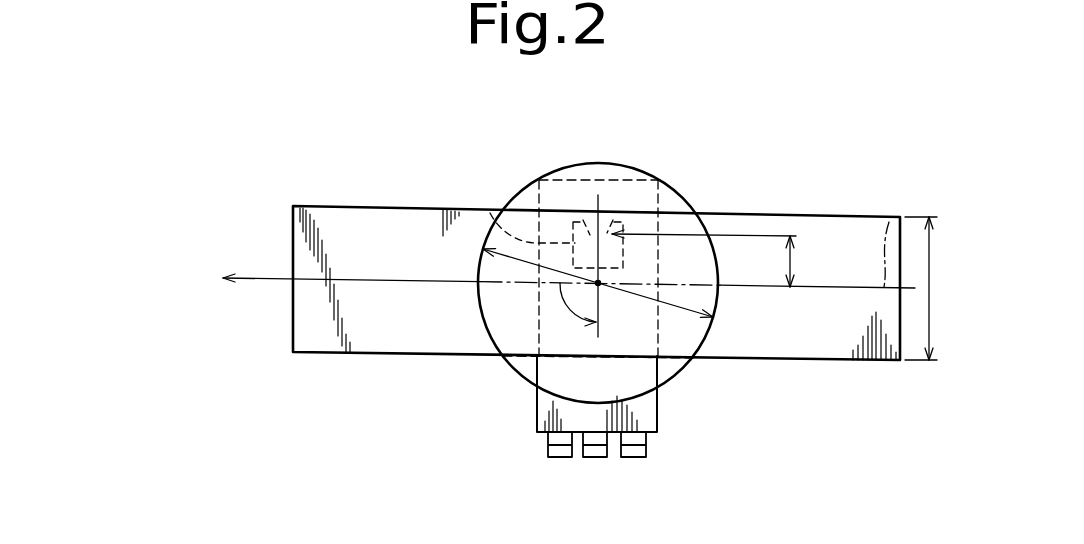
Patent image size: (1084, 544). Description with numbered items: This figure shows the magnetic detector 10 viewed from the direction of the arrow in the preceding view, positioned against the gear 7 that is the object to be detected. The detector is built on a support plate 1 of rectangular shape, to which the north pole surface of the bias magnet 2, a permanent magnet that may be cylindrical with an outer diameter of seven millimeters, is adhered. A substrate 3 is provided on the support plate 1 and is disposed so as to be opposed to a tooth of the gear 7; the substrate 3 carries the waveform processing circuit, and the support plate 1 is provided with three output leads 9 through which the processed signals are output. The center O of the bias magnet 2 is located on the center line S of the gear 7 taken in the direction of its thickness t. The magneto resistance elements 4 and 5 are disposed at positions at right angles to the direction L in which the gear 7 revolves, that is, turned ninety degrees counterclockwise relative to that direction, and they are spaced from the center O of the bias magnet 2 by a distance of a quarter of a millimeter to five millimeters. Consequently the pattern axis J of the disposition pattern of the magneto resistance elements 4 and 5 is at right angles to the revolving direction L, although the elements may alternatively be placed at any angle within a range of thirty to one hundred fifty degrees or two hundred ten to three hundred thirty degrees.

The support plate 1 is at (598, 178).
The bias magnet 2 is at (680, 195).
The substrate 3 is at (490, 211).
The magneto resistance element 4 is at (590, 235).
The magneto resistance element 5 is at (607, 233).
The gear 7 is at (856, 362).
The output leads 9 is at (560, 458).
The magnetic detector 10 is at (754, 94).
The center of the bias magnet O is at (600, 283).
The pattern axis J is at (600, 303).
The center line of the gear S is at (890, 218).
The direction in which the gear revolves L is at (283, 275).
The thickness of the gear t is at (927, 288).